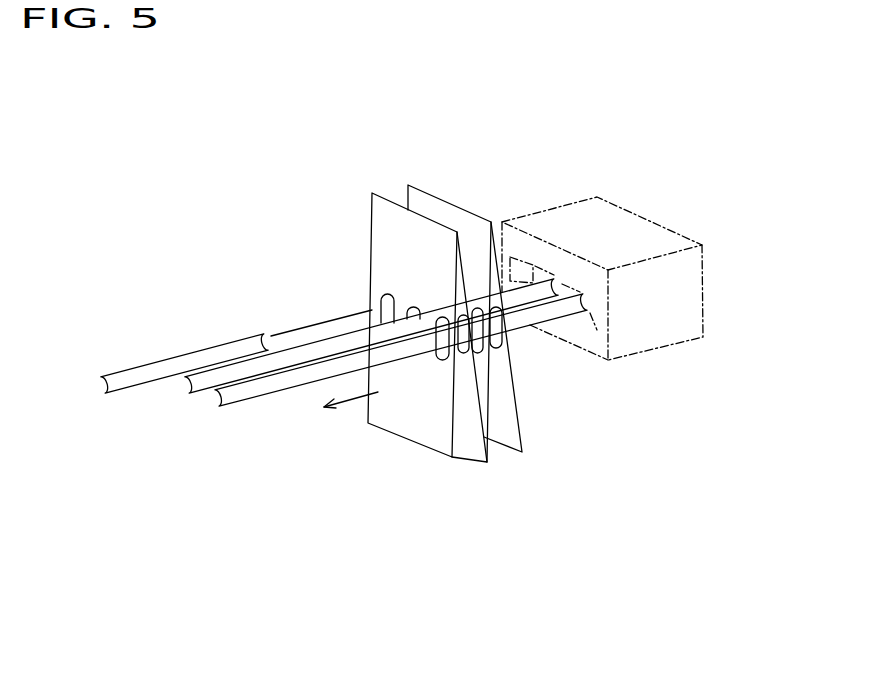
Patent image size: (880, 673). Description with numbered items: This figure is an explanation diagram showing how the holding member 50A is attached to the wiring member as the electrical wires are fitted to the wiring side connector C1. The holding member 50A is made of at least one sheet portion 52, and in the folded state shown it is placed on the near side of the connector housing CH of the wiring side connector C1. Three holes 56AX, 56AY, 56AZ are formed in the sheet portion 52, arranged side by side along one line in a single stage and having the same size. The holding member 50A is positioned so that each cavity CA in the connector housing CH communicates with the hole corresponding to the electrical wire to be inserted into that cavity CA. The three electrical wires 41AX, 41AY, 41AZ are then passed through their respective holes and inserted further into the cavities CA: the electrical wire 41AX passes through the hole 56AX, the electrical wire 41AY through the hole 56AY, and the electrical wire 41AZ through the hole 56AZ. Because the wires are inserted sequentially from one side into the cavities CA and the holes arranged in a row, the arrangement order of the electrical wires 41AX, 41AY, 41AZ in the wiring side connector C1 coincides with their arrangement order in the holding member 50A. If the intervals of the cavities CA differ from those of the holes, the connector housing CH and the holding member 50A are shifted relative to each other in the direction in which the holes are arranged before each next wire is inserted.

The holding member 50A is at (452, 193).
The sheet portion 52 is at (467, 440).
The electrical wire 41AX is at (253, 393).
The electrical wire 41AY is at (197, 388).
The electrical wire 41AZ is at (117, 386).
The hole 56AX is at (438, 317).
The hole 56AY is at (410, 301).
The hole 56AZ is at (373, 312).
The wiring side connector C1 is at (627, 313).
The cavity CA is at (600, 315).
The connector housing CH is at (638, 352).